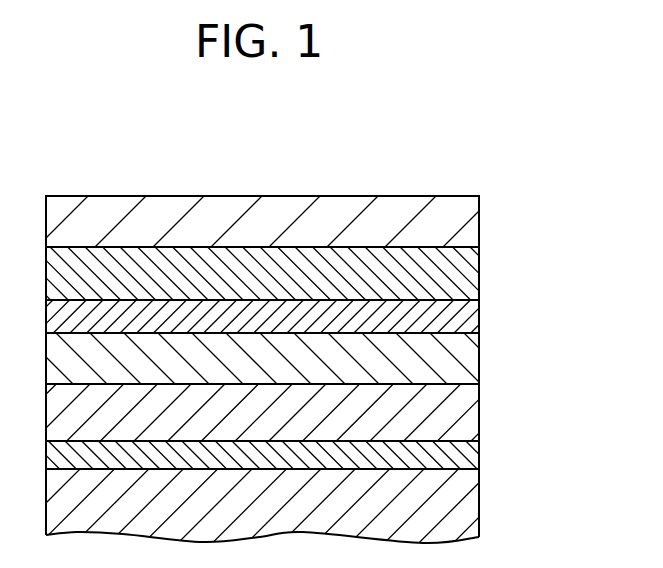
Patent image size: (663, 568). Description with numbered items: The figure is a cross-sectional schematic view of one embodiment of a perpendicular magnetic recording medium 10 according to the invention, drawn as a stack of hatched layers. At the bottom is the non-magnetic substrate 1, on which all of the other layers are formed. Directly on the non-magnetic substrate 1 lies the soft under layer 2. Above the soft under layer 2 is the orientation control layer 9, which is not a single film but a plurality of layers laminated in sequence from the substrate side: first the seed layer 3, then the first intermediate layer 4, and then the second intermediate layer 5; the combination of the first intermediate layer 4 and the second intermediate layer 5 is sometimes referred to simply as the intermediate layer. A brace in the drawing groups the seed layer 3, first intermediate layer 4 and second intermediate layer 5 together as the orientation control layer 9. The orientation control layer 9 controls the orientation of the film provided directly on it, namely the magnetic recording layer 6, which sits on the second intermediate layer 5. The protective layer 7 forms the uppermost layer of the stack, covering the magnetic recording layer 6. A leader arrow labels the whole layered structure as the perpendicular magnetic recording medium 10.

The non-magnetic substrate 1 is at (467, 505).
The soft under layer 2 is at (467, 457).
The seed layer 3 is at (467, 417).
The first intermediate layer 4 is at (467, 357).
The second intermediate layer 5 is at (467, 317).
The magnetic recording layer 6 is at (467, 274).
The protective layer 7 is at (467, 225).
The orientation control layer 9 is at (587, 298).
The perpendicular magnetic recording medium 10 is at (494, 164).